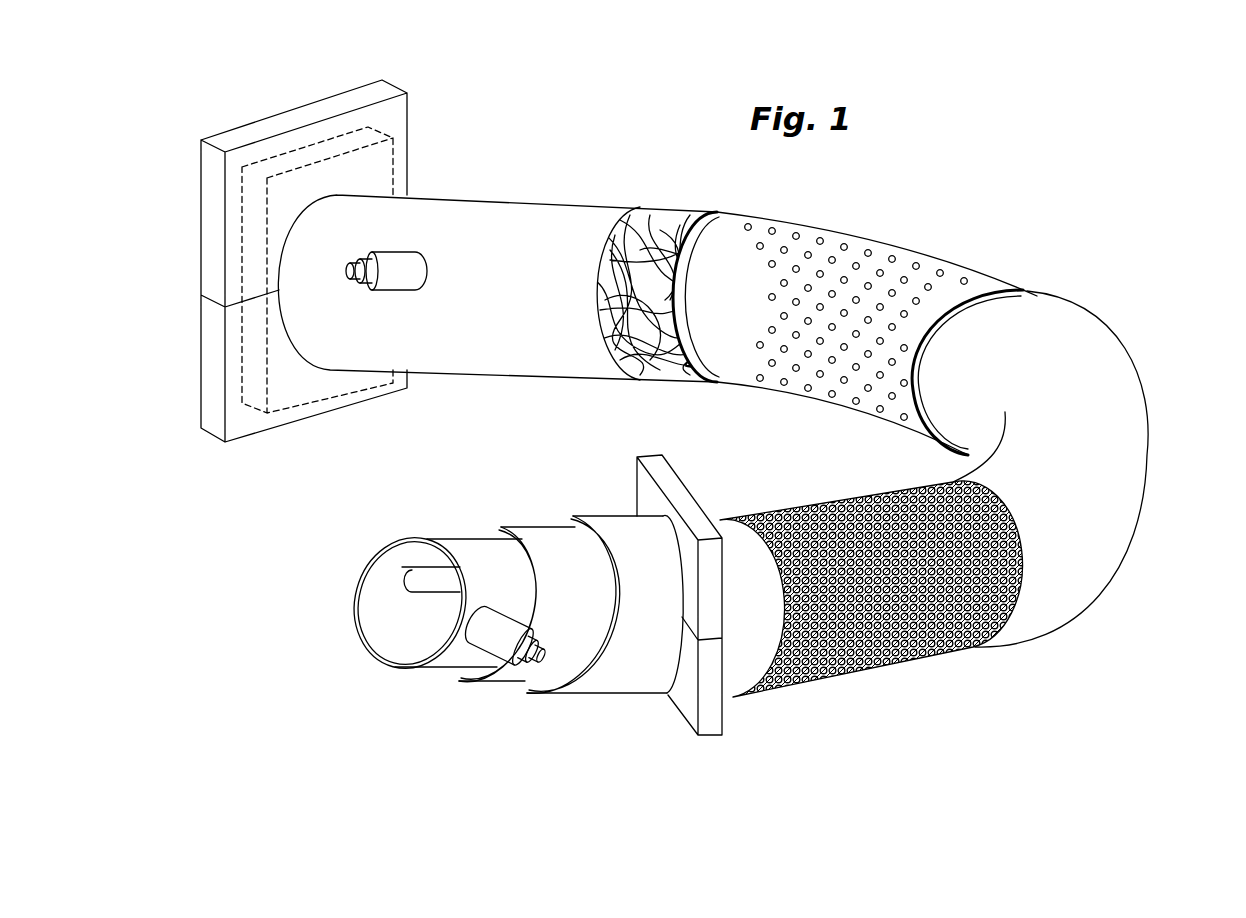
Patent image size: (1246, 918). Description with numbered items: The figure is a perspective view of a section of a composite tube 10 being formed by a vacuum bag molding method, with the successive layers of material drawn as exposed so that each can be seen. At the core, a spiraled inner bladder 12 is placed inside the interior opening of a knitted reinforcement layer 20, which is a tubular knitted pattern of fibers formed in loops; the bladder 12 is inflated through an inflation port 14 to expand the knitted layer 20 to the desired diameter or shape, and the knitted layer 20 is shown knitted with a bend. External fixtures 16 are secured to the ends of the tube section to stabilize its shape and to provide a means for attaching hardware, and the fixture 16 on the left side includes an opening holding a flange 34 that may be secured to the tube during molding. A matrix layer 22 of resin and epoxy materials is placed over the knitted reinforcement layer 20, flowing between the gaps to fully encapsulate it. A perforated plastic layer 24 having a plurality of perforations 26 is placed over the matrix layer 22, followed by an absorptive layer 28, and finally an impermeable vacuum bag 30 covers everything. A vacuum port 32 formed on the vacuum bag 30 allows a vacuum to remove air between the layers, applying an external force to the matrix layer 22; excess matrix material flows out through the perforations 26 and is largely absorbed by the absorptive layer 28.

The composite tube 10 is at (628, 147).
The spiraled inner bladder 12 is at (547, 540).
The inflation port 14 is at (490, 632).
The external fixture 16 is at (212, 370).
The knitted reinforcement layer 20 is at (887, 490).
The matrix layer 22 is at (1070, 368).
The perforated plastic layer 24 is at (922, 252).
The perforations 26 is at (867, 265).
The absorptive layer 28 is at (665, 217).
The impermeable vacuum bag 30 is at (472, 213).
The vacuum port 32 is at (417, 272).
The flange 34 is at (372, 168).